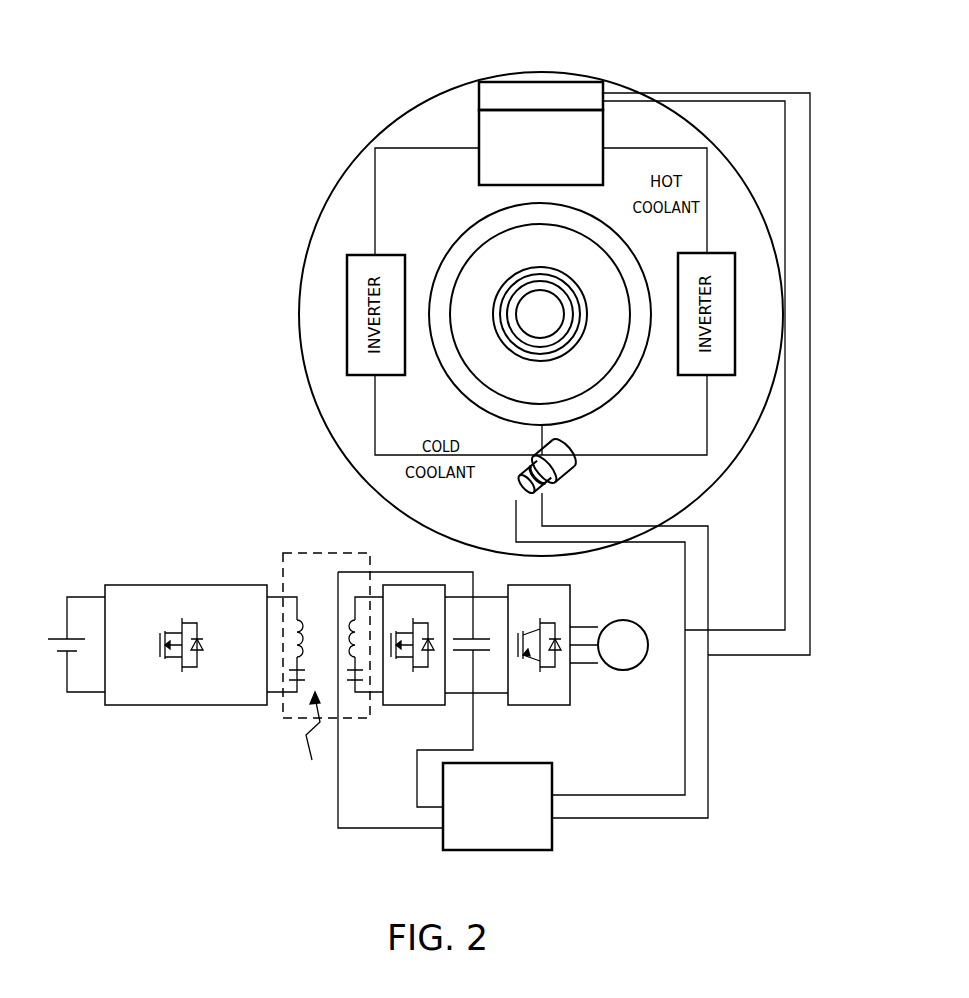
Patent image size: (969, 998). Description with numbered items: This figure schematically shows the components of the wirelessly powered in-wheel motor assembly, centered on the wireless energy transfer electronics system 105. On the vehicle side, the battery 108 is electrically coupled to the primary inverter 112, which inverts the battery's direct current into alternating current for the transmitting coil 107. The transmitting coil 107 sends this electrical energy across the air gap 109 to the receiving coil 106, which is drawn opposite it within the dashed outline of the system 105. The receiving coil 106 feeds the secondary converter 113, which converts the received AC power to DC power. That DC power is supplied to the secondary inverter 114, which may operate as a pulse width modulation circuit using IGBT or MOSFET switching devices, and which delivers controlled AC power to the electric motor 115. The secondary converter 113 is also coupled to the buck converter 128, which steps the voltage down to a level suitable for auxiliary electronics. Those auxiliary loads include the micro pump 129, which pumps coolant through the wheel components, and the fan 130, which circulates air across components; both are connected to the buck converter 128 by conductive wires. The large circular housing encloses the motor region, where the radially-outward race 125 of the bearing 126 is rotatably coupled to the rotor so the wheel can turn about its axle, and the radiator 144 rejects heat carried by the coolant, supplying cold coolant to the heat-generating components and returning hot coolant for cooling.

The wireless energy transfer electronics system 105 is at (300, 612).
The receiving coil 106 is at (353, 620).
The transmitting coil 107 is at (296, 632).
The battery 108 is at (60, 638).
The air gap 109 is at (304, 739).
The primary inverter 112 is at (182, 707).
The secondary converter 113 is at (398, 705).
The secondary inverter 114 is at (570, 597).
The electric motor 115 is at (622, 670).
The radially-outward race 125 is at (527, 275).
The bearing 126 is at (568, 333).
The buck converter 128 is at (540, 852).
The micro pump 129 is at (577, 470).
The fan 130 is at (563, 82).
The radiator 144 is at (603, 138).